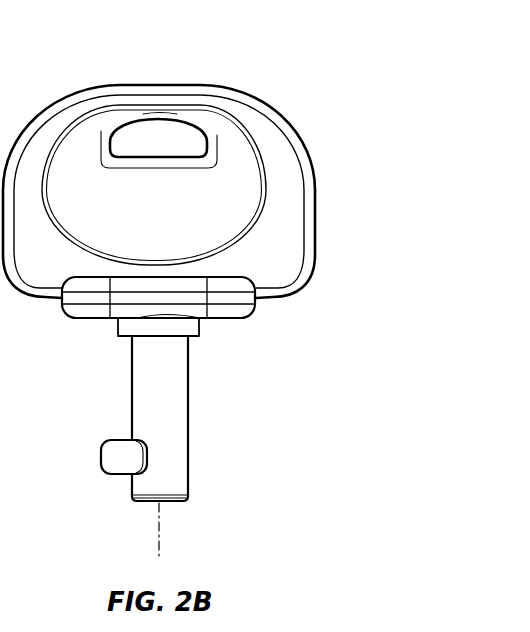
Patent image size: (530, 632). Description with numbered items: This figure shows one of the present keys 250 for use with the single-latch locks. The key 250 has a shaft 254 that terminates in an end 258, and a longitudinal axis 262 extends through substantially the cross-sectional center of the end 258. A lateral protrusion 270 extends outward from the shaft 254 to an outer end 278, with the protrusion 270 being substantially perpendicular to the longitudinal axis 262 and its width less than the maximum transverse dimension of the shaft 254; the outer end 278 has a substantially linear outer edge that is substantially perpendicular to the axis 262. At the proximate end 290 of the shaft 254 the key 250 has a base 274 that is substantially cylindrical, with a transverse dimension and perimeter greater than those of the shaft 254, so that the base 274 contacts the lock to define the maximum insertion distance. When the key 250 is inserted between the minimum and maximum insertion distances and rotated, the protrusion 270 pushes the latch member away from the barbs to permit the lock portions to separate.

The key 250 is at (265, 70).
The shaft 254 is at (189, 398).
The end 258 is at (145, 503).
The longitudinal axis 262 is at (162, 557).
The lateral protrusion 270 is at (112, 466).
The base 274 is at (117, 330).
The outer end 278 is at (100, 452).
The proximate end 290 is at (188, 338).